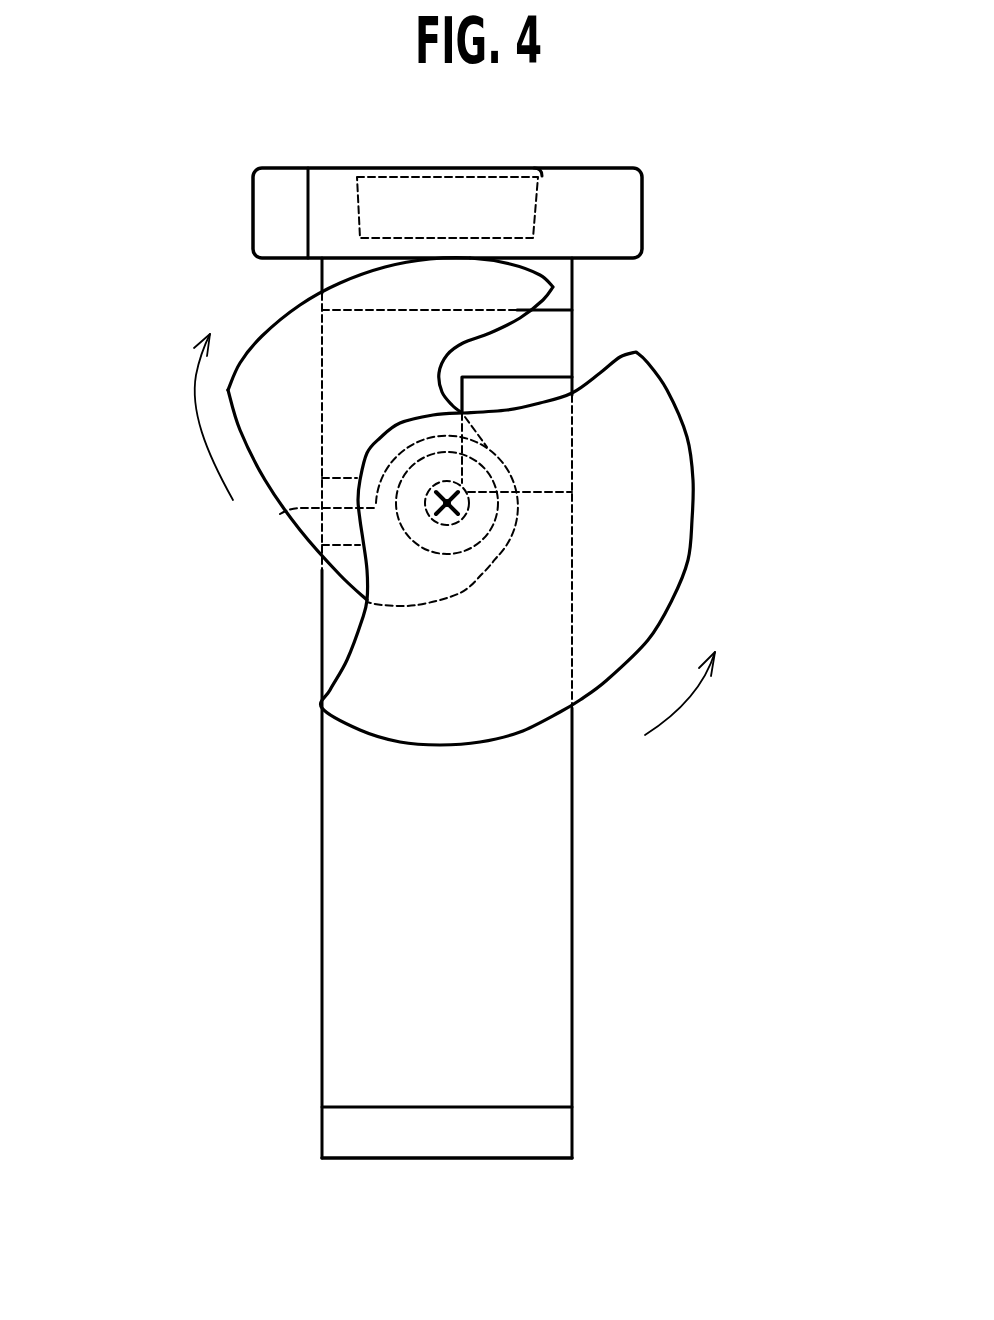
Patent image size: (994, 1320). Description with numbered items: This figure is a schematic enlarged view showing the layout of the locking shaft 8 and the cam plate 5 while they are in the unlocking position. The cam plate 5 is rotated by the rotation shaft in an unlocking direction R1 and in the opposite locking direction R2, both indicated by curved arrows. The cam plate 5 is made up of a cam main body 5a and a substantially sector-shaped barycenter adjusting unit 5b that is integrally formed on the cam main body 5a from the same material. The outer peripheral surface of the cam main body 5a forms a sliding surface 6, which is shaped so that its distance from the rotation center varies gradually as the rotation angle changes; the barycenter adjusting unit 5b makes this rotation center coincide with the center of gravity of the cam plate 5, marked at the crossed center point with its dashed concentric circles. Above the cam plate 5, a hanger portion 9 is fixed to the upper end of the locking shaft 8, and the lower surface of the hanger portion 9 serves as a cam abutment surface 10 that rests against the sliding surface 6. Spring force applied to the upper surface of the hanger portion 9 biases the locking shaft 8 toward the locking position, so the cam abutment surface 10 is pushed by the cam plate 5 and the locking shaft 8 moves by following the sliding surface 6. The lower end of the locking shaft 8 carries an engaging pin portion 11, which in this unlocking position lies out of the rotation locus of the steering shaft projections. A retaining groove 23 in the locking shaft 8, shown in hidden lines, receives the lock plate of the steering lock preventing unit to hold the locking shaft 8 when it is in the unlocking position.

The cam plate 5 is at (536, 491).
The cam main body 5a is at (461, 323).
The barycenter adjusting unit 5b is at (658, 428).
The sliding surface 6 is at (283, 318).
The locking shaft 8 is at (548, 873).
The hanger portion 9 is at (625, 210).
The cam abutment surface 10 is at (552, 262).
The engaging pin portion 11 is at (548, 1135).
The retaining groove 23 is at (342, 542).
The unlocking direction R1 is at (688, 702).
The locking direction R2 is at (190, 376).